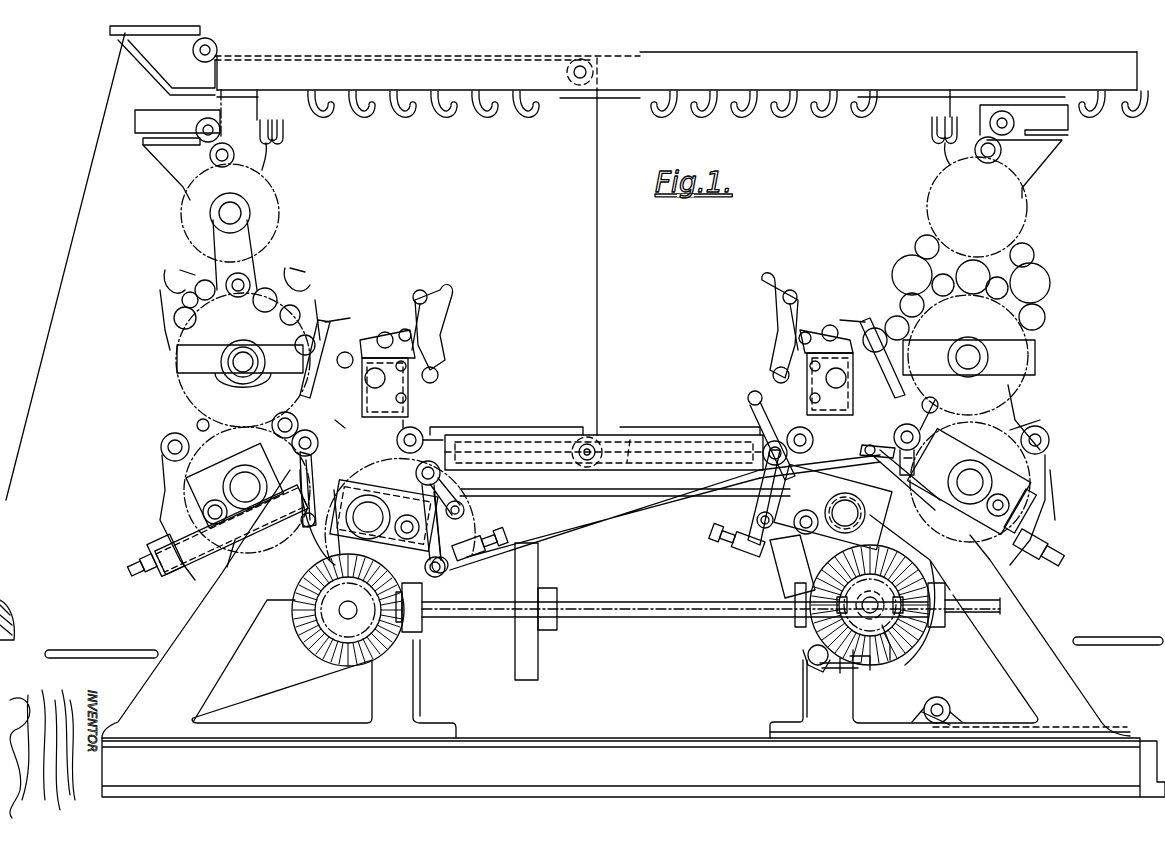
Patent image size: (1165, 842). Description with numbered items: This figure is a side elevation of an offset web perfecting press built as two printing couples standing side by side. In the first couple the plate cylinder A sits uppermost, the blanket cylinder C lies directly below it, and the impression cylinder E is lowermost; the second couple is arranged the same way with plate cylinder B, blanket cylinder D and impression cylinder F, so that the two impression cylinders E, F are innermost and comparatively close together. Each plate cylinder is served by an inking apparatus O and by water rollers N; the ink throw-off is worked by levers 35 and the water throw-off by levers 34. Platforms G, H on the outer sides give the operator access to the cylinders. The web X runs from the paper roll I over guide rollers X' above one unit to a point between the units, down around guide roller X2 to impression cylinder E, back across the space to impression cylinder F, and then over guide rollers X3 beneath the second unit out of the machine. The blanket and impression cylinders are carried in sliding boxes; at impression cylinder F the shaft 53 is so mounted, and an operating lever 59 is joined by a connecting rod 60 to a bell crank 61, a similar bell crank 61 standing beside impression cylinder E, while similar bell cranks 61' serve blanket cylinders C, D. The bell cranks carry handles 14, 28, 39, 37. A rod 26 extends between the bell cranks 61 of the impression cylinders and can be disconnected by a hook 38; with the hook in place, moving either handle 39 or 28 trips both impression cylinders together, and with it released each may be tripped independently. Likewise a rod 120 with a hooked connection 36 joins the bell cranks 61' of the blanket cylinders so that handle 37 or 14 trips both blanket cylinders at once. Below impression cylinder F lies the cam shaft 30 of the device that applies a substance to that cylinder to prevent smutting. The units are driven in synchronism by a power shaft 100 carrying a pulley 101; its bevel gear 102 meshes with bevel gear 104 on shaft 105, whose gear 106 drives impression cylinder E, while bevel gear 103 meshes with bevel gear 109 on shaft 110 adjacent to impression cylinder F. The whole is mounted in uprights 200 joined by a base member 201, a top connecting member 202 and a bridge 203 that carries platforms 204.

The top connecting member 202 is at (632, 52).
The guide rollers X' is at (590, 246).
The web X is at (65, 266).
The inking apparatus O is at (624, 193).
The plate cylinder A is at (240, 353).
The plate cylinder B is at (956, 342).
The blanket cylinder C is at (216, 507).
The blanket cylinder D is at (986, 495).
The impression cylinder E is at (362, 462).
The impression cylinder F is at (833, 488).
The water rollers N is at (380, 378).
The platform G is at (133, 650).
The platform H is at (1124, 637).
The paper roll I is at (8, 615).
The levers 35 is at (322, 322).
The levers 34 is at (445, 300).
The handle 39 is at (750, 402).
The bridge 203 is at (538, 440).
The platforms 204 is at (503, 432).
The guide roller X2 is at (592, 440).
The rod 120 is at (632, 440).
The rod 26 is at (625, 486).
The handle 28 is at (458, 568).
The bell crank 61 is at (601, 505).
The bell cranks 61' is at (621, 449).
The connecting rod 60 is at (470, 538).
The handle 14 is at (319, 489).
The hooked connection 36 is at (875, 448).
The handle 37 is at (910, 590).
The hook 38 is at (820, 470).
The shaft 53 is at (845, 513).
The operating lever 59 is at (775, 560).
The power shaft 100 is at (610, 600).
The pulley 101 is at (538, 640).
The bevel gear 102 is at (414, 626).
The bevel gear 103 is at (858, 612).
The bevel gear 104 is at (310, 660).
The shaft 105 is at (340, 612).
The gear 106 is at (318, 575).
The bevel gear 109 is at (882, 660).
The shaft 110 is at (800, 648).
The cam shaft 30 is at (920, 648).
The uprights 200 is at (616, 604).
The base member 201 is at (633, 762).
The guide rollers X3 is at (938, 724).